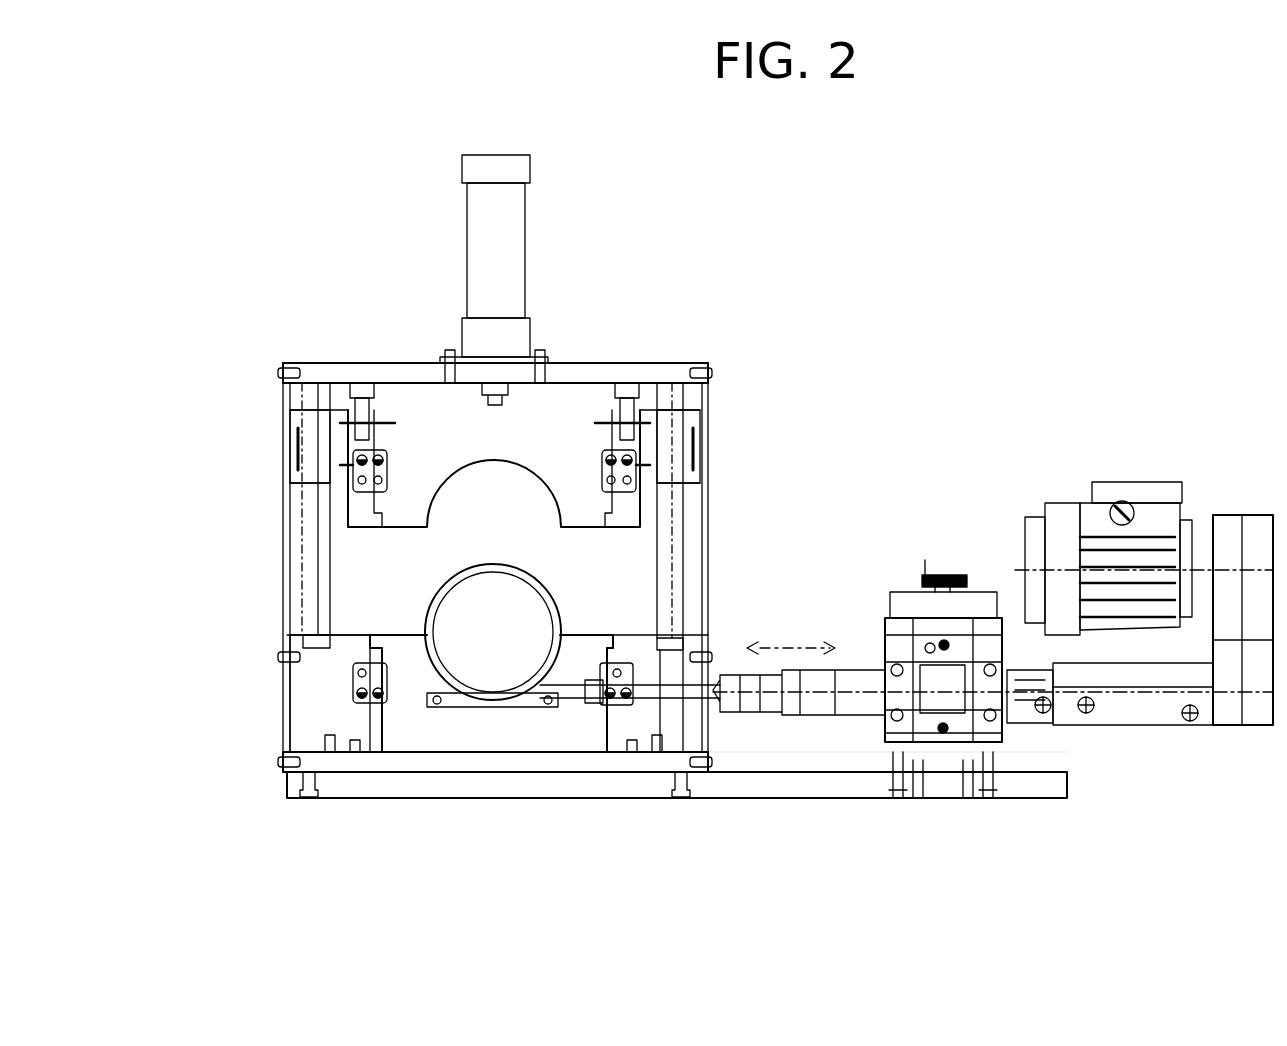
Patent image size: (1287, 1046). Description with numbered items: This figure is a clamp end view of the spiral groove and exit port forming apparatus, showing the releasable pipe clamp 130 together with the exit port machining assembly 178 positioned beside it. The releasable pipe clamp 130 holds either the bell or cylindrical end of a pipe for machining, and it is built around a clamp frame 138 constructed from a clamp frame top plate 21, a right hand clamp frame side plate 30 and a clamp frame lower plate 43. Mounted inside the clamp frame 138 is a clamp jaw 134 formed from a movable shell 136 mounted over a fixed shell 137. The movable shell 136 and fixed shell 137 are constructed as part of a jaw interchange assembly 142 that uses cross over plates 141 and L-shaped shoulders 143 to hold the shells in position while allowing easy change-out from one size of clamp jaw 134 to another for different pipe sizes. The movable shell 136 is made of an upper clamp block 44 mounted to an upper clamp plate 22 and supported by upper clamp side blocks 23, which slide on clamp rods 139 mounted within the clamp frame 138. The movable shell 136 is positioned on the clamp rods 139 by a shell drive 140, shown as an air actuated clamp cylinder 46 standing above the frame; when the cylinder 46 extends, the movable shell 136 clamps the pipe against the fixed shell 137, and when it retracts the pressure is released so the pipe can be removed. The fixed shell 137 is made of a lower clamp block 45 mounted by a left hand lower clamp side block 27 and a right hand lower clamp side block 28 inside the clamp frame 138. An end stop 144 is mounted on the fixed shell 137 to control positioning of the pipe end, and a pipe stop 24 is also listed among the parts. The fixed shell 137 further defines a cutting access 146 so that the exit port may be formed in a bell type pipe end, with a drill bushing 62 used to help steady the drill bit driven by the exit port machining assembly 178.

The clamp frame top plate 21 is at (578, 365).
The upper clamp plate 22 is at (600, 388).
The upper clamp side block 23 is at (313, 400).
The pipe stop 24 is at (277, 390).
The left hand lower clamp side block 27 is at (290, 720).
The right hand lower clamp side block 28 is at (700, 725).
The right hand clamp frame side plate 30 is at (710, 402).
The clamp frame lower plate 43 is at (382, 760).
The upper clamp block 44 is at (412, 428).
The lower clamp block 45 is at (462, 730).
The clamp cylinder 46 is at (516, 156).
The drill bushing 62 is at (577, 680).
The releasable pipe clamp 130 is at (654, 252).
The clamp jaw 134 is at (356, 548).
The movable shell 136 is at (278, 418).
The fixed shell 137 is at (270, 690).
The clamp frame 138 is at (680, 385).
The clamp rods 139 is at (675, 520).
The shell drive 140 is at (527, 215).
The cross over plates 141 is at (603, 705).
The jaw interchange assembly 142 is at (622, 538).
The L-shaped shoulders 143 is at (620, 632).
The end stop 144 is at (510, 710).
The cutting access 146 is at (580, 700).
The exit port machining assembly 178 is at (1253, 498).